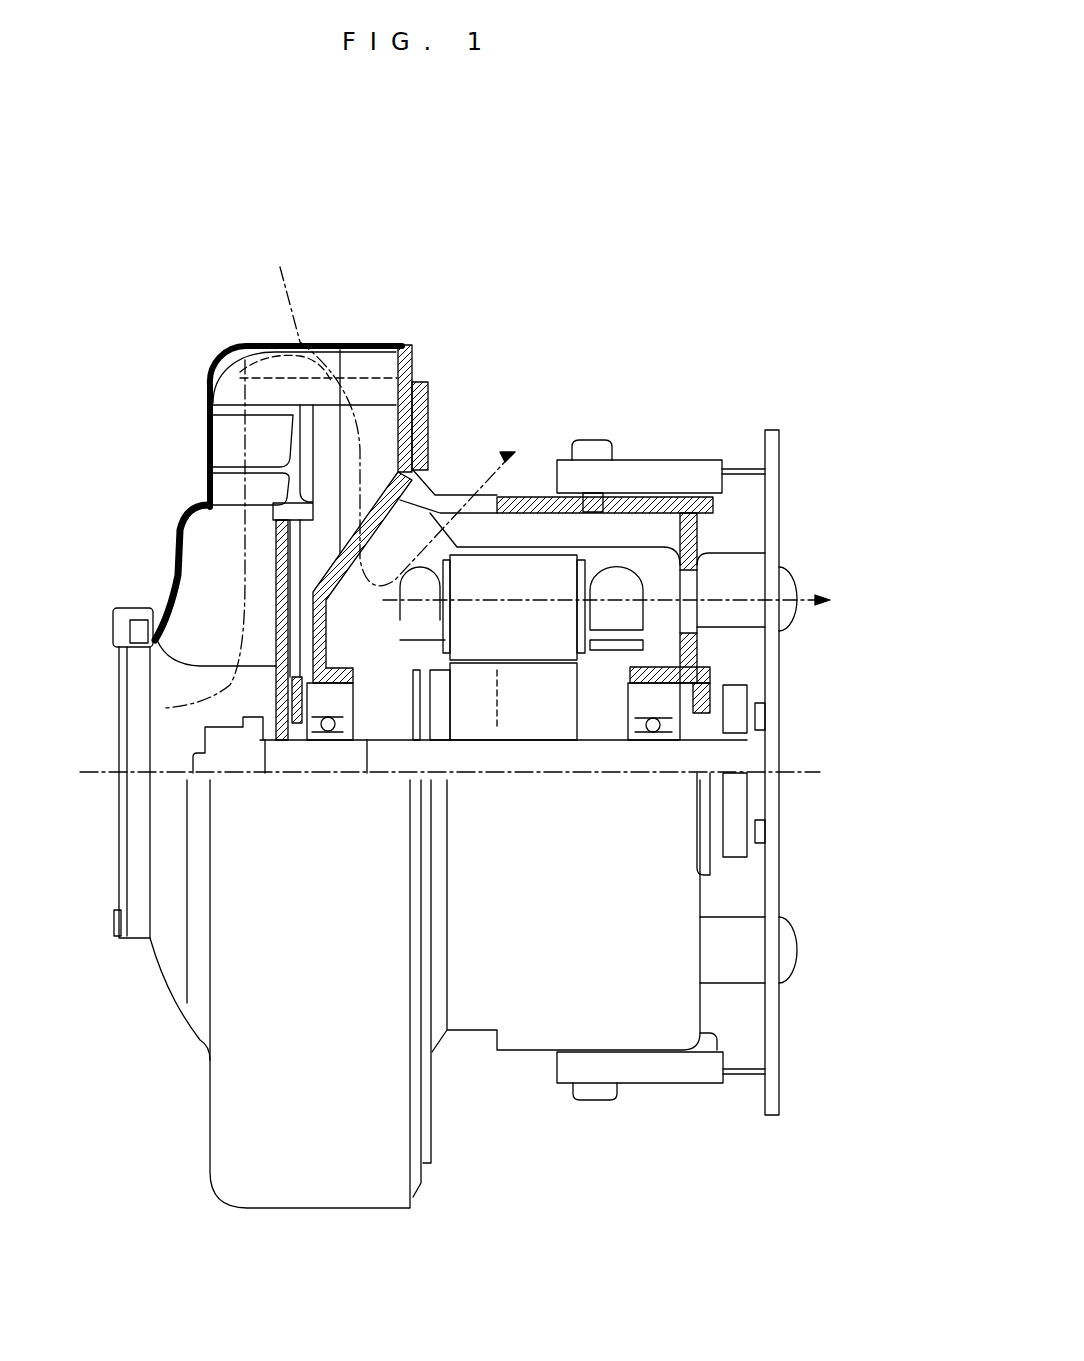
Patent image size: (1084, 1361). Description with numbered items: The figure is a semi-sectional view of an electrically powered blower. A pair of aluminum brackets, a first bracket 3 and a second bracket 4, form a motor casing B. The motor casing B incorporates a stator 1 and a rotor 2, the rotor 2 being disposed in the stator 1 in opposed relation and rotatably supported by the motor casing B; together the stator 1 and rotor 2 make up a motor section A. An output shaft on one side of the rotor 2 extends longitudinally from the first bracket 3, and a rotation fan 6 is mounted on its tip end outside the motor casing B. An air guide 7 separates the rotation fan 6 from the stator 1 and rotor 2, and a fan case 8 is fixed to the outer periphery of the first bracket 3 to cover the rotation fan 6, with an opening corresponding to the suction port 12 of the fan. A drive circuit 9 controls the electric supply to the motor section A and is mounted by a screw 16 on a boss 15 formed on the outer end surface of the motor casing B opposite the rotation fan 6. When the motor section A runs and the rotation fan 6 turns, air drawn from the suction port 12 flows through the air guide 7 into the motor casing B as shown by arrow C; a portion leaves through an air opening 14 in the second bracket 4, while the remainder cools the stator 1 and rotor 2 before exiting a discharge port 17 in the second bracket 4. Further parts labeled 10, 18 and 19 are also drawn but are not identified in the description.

The stator 1 is at (545, 625).
The rotor 2 is at (545, 707).
The first bracket 3 is at (402, 342).
The second bracket 4 is at (428, 383).
The rotation fan 6 is at (220, 635).
The air guide 7 is at (237, 408).
The fan case 8 is at (210, 403).
The drive circuit 9 is at (777, 487).
The stator 10 is at (692, 1248).
The suction port 12 is at (168, 683).
The air opening 14 is at (432, 495).
The boss 15 is at (735, 577).
The screw 16 is at (790, 566).
The discharge port 17 is at (691, 595).
The partition wall 18 is at (538, 497).
The fastening bolt 19 is at (588, 450).
The motor section A is at (891, 713).
The motor casing B is at (388, 248).
The arrow C is at (550, 420).